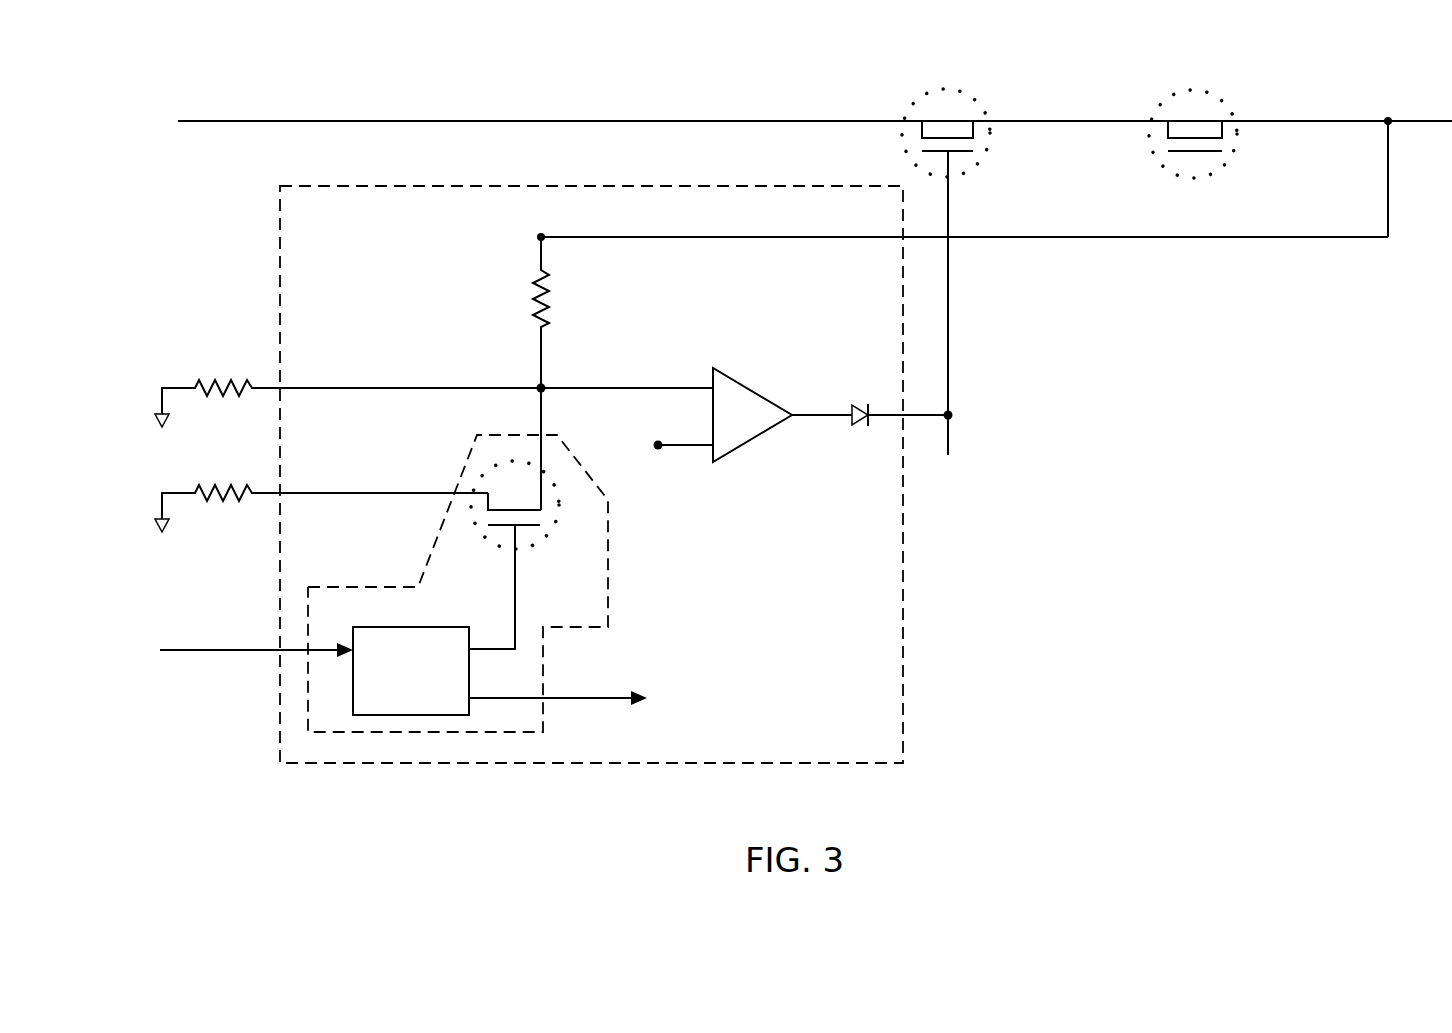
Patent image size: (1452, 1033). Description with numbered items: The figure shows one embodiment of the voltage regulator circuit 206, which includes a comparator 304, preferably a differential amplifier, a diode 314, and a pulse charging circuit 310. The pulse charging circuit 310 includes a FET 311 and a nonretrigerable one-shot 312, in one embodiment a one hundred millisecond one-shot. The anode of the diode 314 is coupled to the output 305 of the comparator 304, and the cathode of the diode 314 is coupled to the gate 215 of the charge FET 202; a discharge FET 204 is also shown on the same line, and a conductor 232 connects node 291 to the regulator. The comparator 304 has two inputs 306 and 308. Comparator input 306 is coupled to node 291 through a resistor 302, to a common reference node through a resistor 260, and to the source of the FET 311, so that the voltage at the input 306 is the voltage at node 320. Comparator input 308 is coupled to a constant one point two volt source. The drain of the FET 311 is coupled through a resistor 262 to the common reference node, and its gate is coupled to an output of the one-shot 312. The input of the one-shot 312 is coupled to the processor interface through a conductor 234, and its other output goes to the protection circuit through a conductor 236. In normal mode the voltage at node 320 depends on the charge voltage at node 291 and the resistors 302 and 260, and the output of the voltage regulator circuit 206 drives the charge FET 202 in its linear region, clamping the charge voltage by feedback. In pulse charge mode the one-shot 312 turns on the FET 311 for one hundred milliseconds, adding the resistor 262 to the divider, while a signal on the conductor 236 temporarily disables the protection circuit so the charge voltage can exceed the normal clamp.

The node 291 is at (1388, 118).
The charge FET 202 is at (990, 134).
The discharge FET 204 is at (1238, 134).
The supply line 232 is at (728, 236).
The resistor 302 is at (536, 280).
The node 320 is at (540, 385).
The resistor 260 is at (202, 376).
The resistor 262 is at (202, 481).
The comparator input 306 is at (712, 378).
The comparator 304 is at (730, 378).
The output 305 is at (795, 418).
The diode 314 is at (862, 404).
The comparator input 308 is at (686, 448).
The gate 215 is at (950, 412).
The FET 311 is at (530, 552).
The nonretrigerable one-shot 312 is at (435, 627).
The pulse charging circuit 310 is at (598, 627).
The conductor 234 is at (192, 652).
The conductor 236 is at (572, 700).
The voltage regulator circuit 206 is at (870, 763).